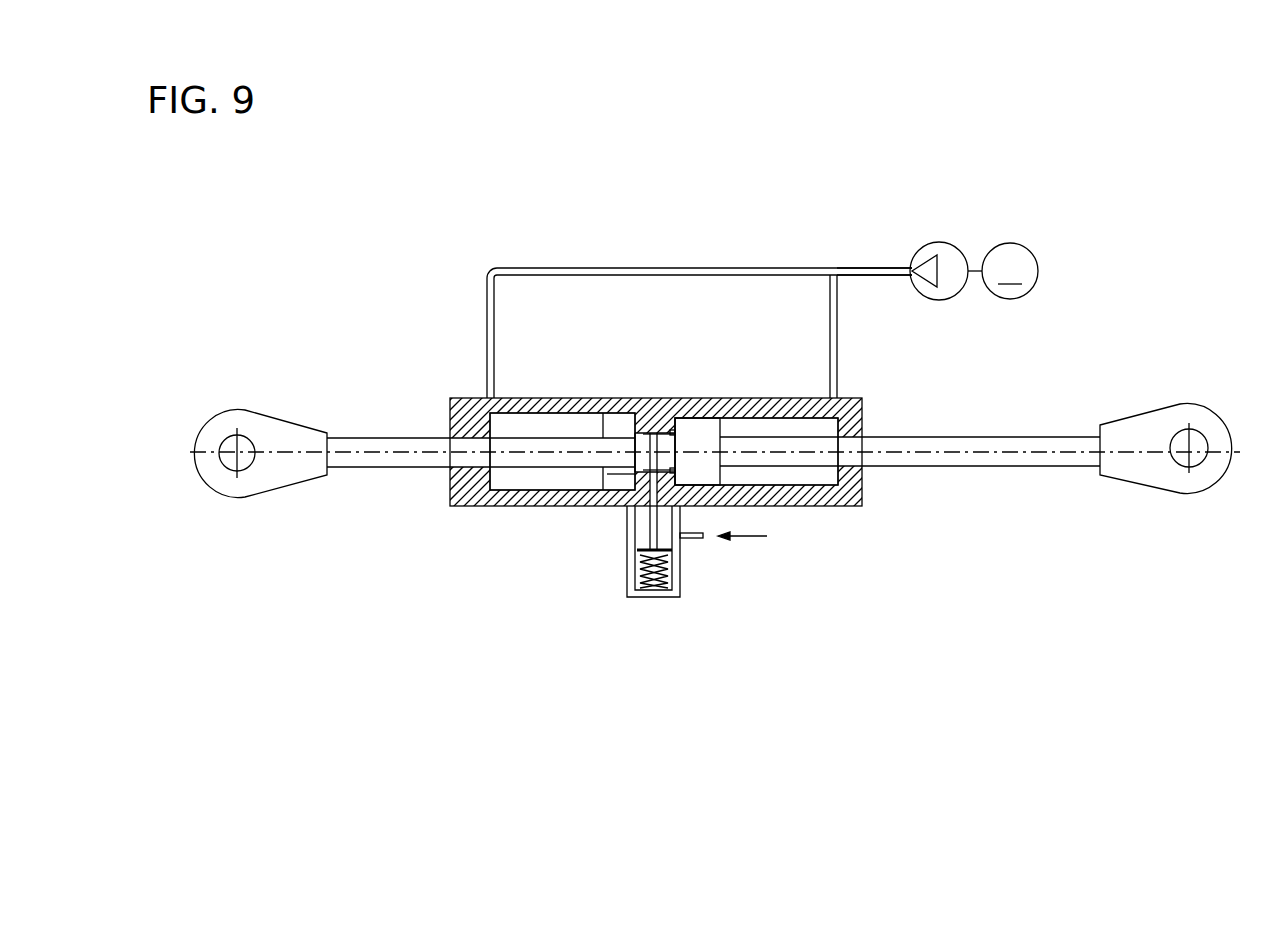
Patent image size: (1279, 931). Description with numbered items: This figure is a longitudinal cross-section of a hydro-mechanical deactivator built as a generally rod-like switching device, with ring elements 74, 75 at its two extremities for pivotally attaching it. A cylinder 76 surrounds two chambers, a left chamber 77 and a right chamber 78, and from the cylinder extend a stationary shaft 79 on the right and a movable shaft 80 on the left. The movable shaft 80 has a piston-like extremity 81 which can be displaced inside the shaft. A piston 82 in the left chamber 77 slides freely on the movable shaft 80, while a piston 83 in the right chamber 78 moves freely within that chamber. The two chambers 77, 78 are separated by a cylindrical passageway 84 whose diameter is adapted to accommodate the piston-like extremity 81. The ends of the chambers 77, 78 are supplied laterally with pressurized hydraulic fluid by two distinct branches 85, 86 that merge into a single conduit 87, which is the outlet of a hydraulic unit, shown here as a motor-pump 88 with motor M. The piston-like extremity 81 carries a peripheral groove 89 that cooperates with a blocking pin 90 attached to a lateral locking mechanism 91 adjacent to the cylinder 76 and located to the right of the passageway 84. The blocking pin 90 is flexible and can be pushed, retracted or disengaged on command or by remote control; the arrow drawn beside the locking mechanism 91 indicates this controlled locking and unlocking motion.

The ring element 74 is at (232, 488).
The ring element 75 is at (1192, 415).
The cylinder 76 is at (545, 545).
The left chamber 77 is at (537, 425).
The right chamber 78 is at (778, 440).
The stationary shaft 79 is at (987, 460).
The movable shaft 80 is at (402, 462).
The piston-like extremity 81 is at (644, 433).
The piston 82 is at (607, 474).
The piston 83 is at (707, 418).
The cylindrical passageway 84 is at (647, 470).
The branch 85 is at (560, 268).
The branch 86 is at (836, 337).
The single conduit 87 is at (865, 268).
The motor-pump 88 is at (985, 226).
The peripheral groove 89 is at (658, 433).
The blocking pin 90 is at (660, 538).
The lateral locking mechanism 91 is at (658, 605).